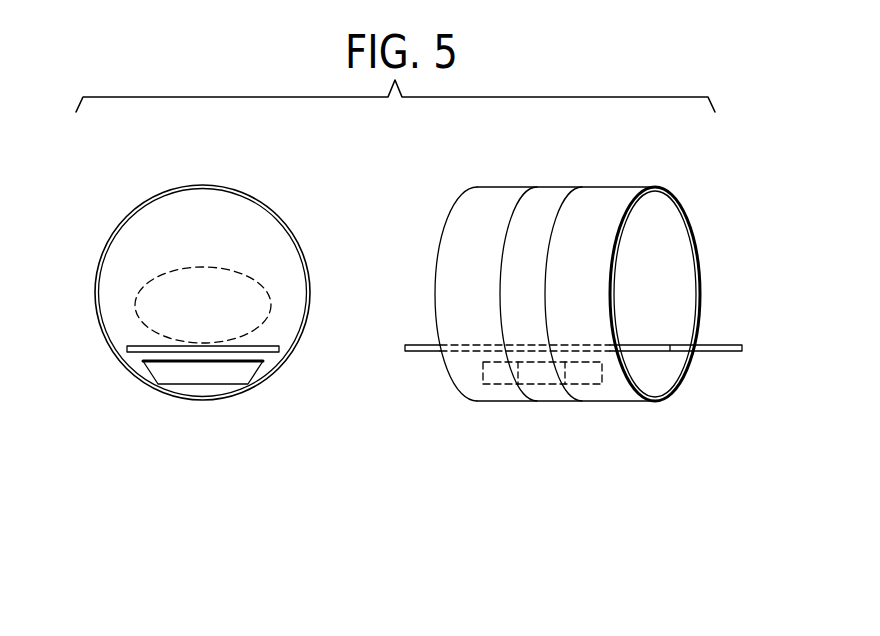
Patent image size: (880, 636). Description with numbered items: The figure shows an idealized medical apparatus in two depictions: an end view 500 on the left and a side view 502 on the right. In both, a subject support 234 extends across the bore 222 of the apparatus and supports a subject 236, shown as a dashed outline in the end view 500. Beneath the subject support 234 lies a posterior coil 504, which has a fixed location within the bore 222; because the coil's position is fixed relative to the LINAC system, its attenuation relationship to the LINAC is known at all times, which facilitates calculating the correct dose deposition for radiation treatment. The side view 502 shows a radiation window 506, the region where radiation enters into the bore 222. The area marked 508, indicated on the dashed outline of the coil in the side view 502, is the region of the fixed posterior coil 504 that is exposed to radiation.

The end view 500 is at (254, 170).
The side view 502 is at (649, 167).
The subject 236 is at (150, 280).
The subject support 234 is at (267, 349).
The posterior coil 504 is at (212, 377).
The radiation window 506 is at (565, 203).
The bore 222 is at (655, 259).
The region of the fixed posterior coil exposed to radiation 508 is at (552, 378).